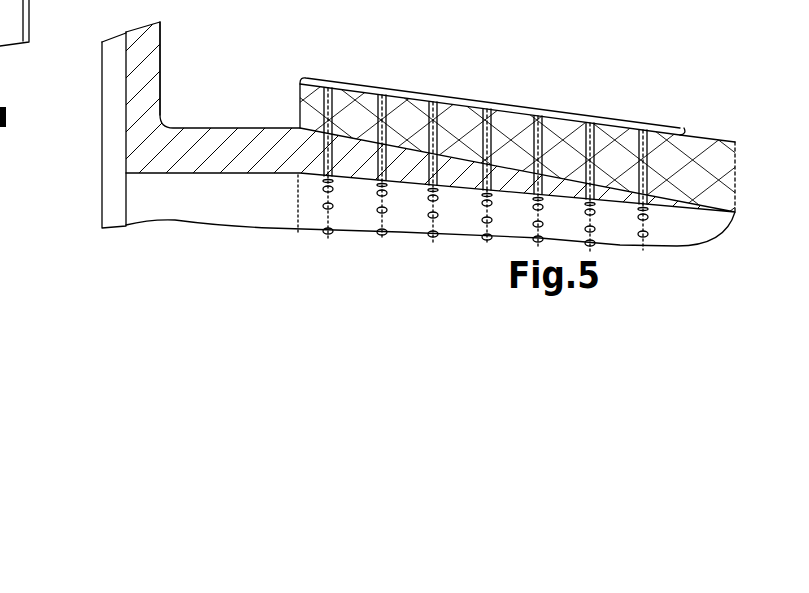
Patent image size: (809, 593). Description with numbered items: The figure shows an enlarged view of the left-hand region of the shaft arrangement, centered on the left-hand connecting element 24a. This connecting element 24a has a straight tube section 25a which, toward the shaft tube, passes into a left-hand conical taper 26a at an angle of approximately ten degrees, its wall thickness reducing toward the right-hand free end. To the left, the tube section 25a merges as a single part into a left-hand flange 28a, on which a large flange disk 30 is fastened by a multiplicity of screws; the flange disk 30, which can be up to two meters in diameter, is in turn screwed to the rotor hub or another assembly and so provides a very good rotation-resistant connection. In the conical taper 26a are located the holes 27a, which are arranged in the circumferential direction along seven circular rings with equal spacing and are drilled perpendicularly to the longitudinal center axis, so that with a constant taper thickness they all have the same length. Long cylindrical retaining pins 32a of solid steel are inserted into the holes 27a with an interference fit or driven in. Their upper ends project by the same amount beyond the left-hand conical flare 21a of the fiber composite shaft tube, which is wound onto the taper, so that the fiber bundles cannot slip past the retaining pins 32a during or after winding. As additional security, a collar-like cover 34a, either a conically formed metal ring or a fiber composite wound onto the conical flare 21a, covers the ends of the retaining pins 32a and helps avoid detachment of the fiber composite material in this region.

The left-hand connecting element 24a is at (244, 44).
The left-hand flange 28a is at (162, 43).
The straight tube section 25a is at (197, 128).
The flange disk 30 is at (102, 208).
The retaining pins 32a is at (432, 116).
The collar-like cover 34a is at (507, 100).
The left-hand conical flare 21a is at (697, 150).
The holes 27a is at (328, 232).
The conical taper 26a is at (457, 175).